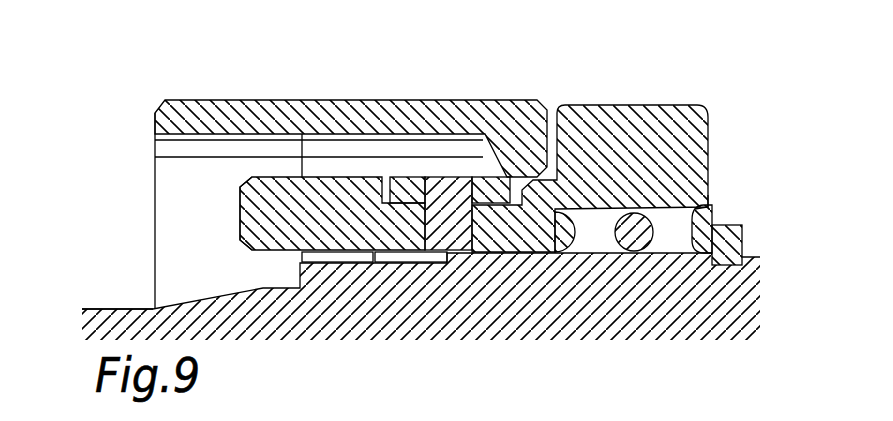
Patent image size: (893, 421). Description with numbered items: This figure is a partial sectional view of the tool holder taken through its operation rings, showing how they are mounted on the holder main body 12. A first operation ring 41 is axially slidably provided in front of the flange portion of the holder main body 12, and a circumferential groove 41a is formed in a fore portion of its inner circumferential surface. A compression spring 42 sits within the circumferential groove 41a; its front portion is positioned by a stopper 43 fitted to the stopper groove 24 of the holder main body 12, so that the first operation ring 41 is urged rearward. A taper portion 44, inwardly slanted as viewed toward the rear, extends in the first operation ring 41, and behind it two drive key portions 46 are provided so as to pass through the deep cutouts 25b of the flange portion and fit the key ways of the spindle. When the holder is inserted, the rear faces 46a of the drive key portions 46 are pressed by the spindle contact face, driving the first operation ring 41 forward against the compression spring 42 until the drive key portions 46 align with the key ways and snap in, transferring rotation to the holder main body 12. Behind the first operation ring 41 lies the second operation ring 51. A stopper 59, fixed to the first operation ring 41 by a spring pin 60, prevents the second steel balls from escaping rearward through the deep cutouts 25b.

The holder main body 12 is at (115, 308).
The stopper groove 24 is at (742, 242).
The deep cutouts 25b is at (318, 152).
The first operation ring 41 is at (612, 142).
The circumferential groove 41a is at (658, 213).
The compression spring 42 is at (632, 240).
The stopper 43 is at (725, 223).
The taper portion 44 is at (525, 172).
The drive key portions 46 is at (270, 192).
The rear faces 46a is at (240, 212).
The second operation ring 51 is at (183, 100).
The stopper 59 is at (400, 190).
The spring pin 60 is at (447, 197).